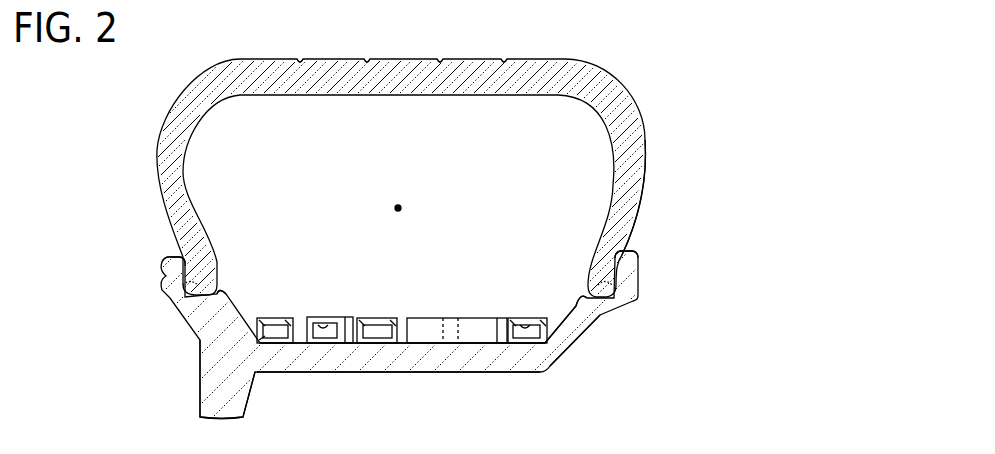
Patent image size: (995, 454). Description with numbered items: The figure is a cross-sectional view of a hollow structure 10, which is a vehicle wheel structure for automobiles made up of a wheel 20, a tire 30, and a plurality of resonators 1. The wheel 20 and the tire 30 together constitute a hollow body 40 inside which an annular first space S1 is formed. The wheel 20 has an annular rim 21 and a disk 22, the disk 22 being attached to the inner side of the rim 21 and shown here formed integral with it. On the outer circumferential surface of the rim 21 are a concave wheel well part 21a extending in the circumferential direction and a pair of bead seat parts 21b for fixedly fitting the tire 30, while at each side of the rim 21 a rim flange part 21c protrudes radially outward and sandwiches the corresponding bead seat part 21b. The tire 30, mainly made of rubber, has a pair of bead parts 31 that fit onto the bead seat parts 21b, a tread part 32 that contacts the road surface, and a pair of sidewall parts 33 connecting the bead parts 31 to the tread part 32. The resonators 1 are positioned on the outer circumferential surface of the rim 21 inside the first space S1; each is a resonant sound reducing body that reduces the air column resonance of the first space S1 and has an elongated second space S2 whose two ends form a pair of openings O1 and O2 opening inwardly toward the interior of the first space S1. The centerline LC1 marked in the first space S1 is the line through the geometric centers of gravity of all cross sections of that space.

The hollow structure 10 is at (755, 146).
The wheel 20 is at (640, 278).
The rim 21 is at (558, 345).
The wheel well part 21a is at (556, 355).
The bead seat part 21b is at (183, 300).
The rim flange part 21c is at (165, 285).
The disk 22 is at (205, 400).
The tire 30 is at (648, 200).
The bead part 31 is at (180, 285).
The tread part 32 is at (262, 78).
The sidewall part 33 is at (633, 158).
The hollow body 40 is at (735, 205).
The resonator 1 is at (268, 316).
The opening O1 is at (543, 320).
The opening O2 is at (308, 320).
The first space S1 is at (340, 151).
The second space S2 is at (270, 332).
The centerline LC1 is at (400, 206).